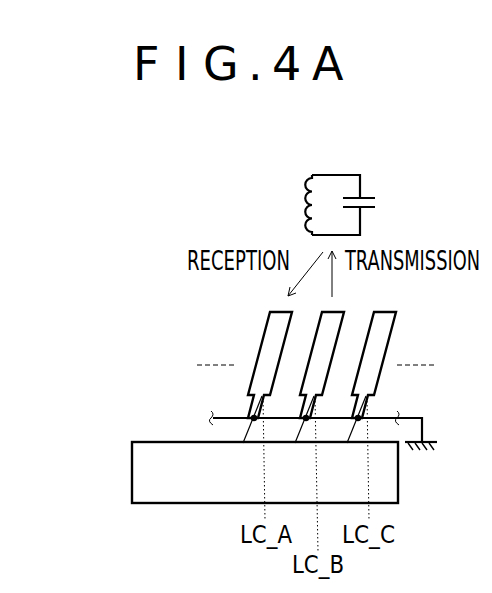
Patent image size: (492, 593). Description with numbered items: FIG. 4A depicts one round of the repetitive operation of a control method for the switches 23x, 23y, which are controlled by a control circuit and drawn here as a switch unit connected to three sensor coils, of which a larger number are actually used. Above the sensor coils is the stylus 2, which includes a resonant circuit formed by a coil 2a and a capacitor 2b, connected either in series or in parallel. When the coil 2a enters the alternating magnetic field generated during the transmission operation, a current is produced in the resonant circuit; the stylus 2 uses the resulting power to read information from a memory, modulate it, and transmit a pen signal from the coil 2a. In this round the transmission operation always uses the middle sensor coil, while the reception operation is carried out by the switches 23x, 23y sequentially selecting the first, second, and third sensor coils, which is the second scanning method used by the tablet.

The coil 2a is at (306, 211).
The capacitor 2b is at (376, 198).
The switch 23x is at (206, 474).
The switch 23y is at (130, 470).
The stylus 2 is at (487, 476).